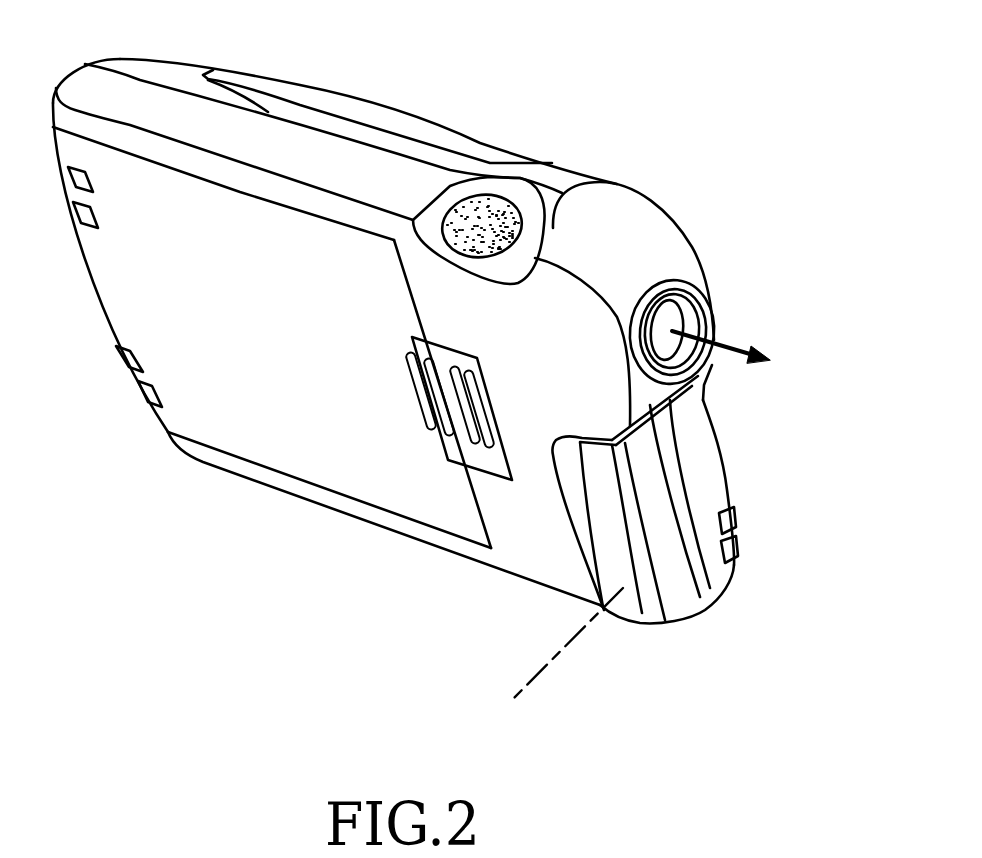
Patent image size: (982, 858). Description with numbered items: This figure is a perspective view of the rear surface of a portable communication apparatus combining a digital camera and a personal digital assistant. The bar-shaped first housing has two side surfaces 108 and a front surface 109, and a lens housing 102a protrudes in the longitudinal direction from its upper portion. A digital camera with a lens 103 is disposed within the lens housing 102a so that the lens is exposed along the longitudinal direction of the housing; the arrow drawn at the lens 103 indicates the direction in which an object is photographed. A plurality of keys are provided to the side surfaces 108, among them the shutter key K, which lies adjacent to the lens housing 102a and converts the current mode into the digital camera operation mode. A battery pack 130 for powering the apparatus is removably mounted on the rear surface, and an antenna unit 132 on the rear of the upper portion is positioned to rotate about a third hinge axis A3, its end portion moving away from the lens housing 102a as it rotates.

The lens housing 102a is at (640, 242).
The lens 103 is at (668, 322).
The side surfaces 108 is at (294, 150).
The front surface 109 is at (698, 472).
The battery pack 130 is at (137, 298).
The antenna unit 132 is at (671, 584).
The shutter key K is at (489, 222).
The third hinge axis A3 is at (537, 677).